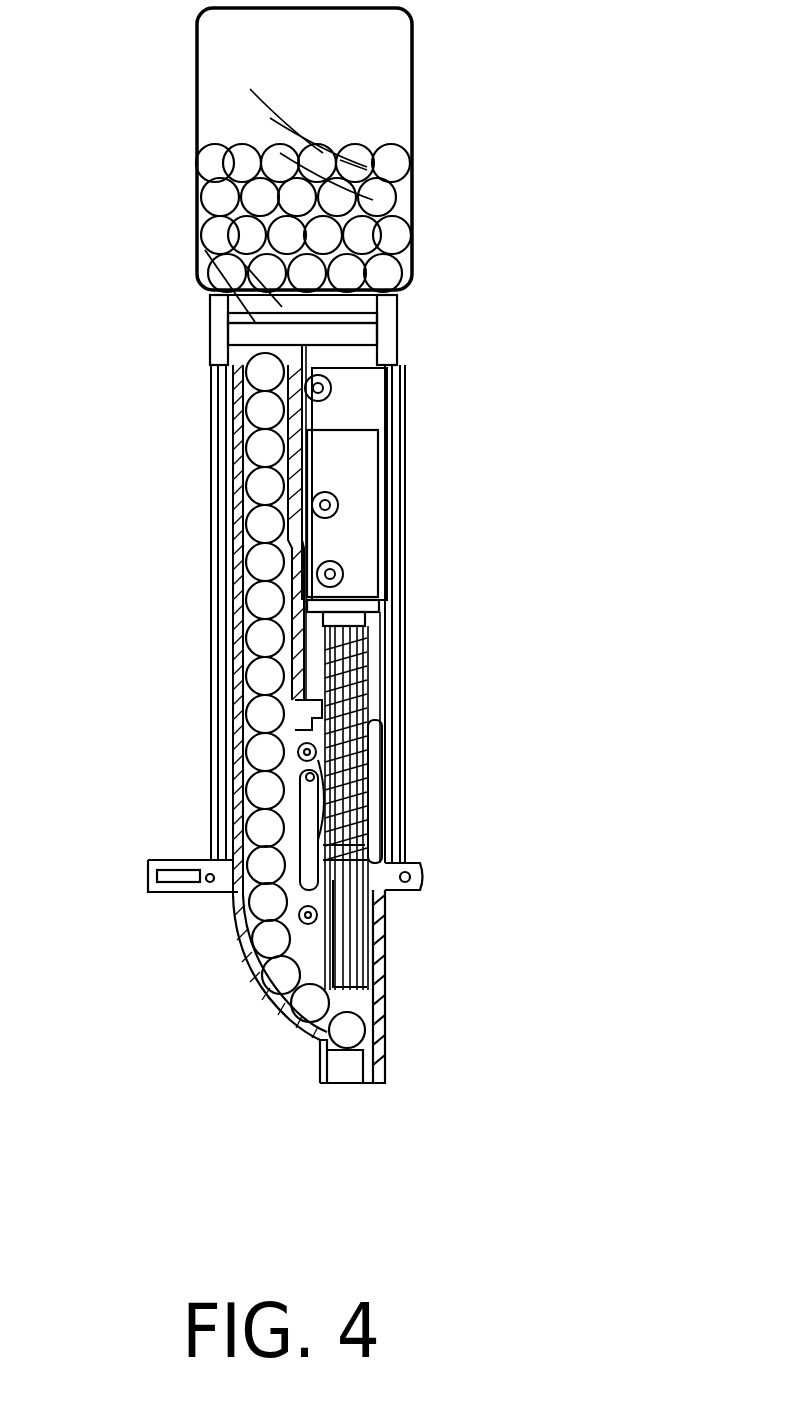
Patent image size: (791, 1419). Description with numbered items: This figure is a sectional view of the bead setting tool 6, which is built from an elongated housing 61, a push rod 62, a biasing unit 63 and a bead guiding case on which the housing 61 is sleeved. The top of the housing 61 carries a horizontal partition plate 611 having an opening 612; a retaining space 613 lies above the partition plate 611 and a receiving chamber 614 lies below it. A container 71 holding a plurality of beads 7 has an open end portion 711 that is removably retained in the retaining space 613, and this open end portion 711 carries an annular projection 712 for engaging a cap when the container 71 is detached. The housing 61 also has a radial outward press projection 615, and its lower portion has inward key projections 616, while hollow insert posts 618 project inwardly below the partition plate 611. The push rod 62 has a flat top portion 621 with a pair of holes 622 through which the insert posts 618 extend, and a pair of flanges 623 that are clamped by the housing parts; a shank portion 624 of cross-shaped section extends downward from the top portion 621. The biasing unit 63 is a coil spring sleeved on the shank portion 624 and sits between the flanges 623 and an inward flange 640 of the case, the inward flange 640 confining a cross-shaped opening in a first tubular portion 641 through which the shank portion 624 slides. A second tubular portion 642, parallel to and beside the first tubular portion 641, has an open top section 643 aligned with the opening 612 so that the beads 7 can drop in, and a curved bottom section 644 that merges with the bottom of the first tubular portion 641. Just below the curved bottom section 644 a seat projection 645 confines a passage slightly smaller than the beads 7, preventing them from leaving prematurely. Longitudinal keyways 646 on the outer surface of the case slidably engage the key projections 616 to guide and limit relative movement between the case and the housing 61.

The bead setting tool 6 is at (413, 583).
The beads 7 is at (398, 237).
The housing 61 is at (403, 418).
The push rod 62 is at (367, 615).
The biasing unit 63 is at (370, 770).
The container 71 is at (375, 63).
The partition plate 611 is at (360, 352).
The opening 612 is at (227, 365).
The retaining space 613 is at (225, 330).
The receiving chamber 614 is at (357, 395).
The press projection 615 is at (178, 870).
The key projection 616 is at (410, 745).
The insert posts 618 is at (357, 518).
The top portion 621 is at (378, 515).
The holes 622 is at (338, 500).
The flanges 623 is at (345, 600).
The shank portion 624 is at (372, 687).
The inward flange 640 is at (367, 827).
The first tubular portion 641 is at (375, 652).
The second tubular portion 642 is at (237, 627).
The open top section 643 is at (245, 388).
The curved bottom section 644 is at (307, 1033).
The seat projection 645 is at (380, 1047).
The keyways 646 is at (307, 862).
The open end portion 711 is at (207, 203).
The annular projection 712 is at (205, 252).